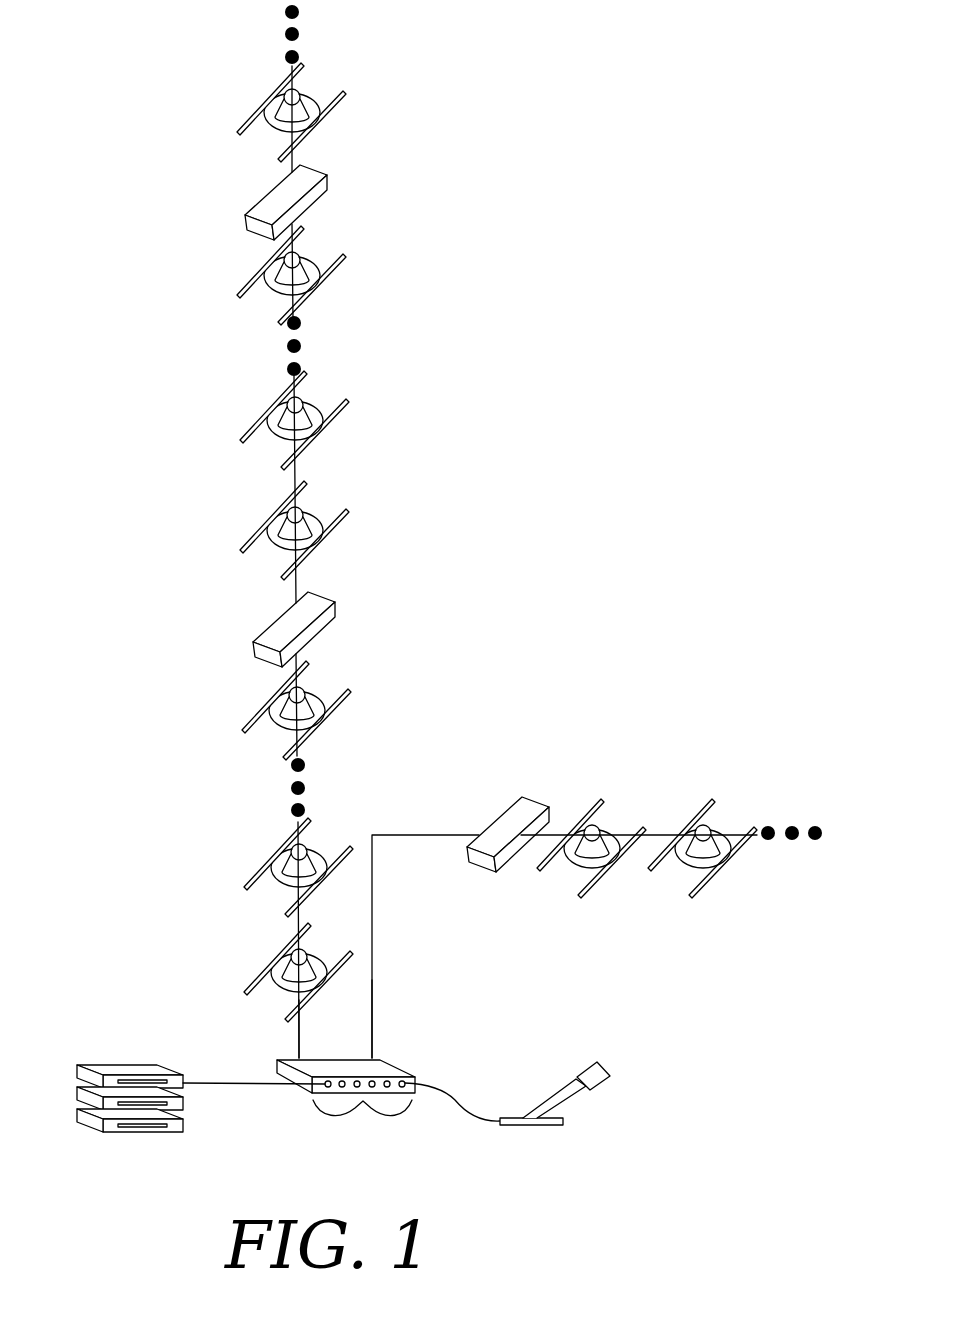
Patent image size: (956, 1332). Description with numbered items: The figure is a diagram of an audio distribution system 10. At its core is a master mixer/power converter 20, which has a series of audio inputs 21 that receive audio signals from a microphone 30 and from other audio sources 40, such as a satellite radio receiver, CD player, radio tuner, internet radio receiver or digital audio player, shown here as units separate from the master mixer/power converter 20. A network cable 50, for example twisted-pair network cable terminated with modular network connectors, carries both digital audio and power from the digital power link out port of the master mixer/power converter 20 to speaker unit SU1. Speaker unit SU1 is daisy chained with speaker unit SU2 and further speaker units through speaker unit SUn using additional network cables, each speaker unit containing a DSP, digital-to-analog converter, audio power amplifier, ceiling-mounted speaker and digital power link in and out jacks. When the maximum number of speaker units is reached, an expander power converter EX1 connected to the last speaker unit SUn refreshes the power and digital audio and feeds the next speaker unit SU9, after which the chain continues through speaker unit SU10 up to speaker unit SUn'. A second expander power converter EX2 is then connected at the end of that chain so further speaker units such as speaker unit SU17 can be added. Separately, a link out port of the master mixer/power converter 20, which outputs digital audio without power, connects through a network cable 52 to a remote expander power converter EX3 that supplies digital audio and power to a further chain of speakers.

The audio distribution system 10 is at (612, 467).
The master mixer/power converter 20 is at (276, 1053).
The audio inputs 21 is at (362, 1121).
The microphone 30 is at (570, 1097).
The audio sources 40 is at (122, 1072).
The network cable 50 is at (302, 1027).
The network cable 52 is at (373, 1000).
The speaker unit SU1 is at (272, 963).
The speaker unit SU2 is at (278, 852).
The speaker unit SU9 is at (273, 522).
The speaker unit SU10 is at (272, 412).
The speaker unit SU17 is at (267, 103).
The speaker unit SUn is at (282, 710).
The speaker unit SUn' is at (276, 275).
The expander power converter EX1 is at (333, 604).
The expander power converter EX2 is at (327, 180).
The remote expander power converter EX3 is at (467, 849).